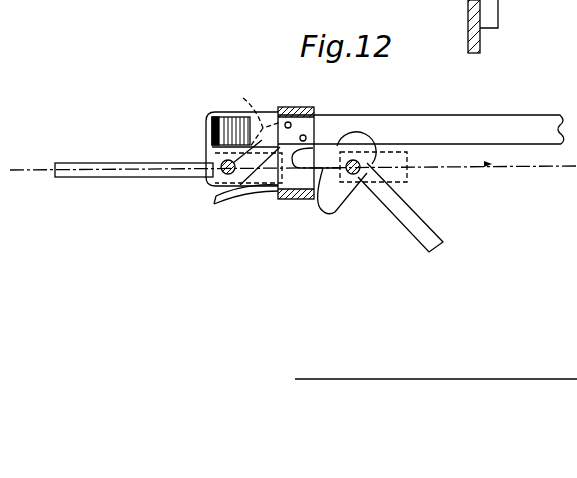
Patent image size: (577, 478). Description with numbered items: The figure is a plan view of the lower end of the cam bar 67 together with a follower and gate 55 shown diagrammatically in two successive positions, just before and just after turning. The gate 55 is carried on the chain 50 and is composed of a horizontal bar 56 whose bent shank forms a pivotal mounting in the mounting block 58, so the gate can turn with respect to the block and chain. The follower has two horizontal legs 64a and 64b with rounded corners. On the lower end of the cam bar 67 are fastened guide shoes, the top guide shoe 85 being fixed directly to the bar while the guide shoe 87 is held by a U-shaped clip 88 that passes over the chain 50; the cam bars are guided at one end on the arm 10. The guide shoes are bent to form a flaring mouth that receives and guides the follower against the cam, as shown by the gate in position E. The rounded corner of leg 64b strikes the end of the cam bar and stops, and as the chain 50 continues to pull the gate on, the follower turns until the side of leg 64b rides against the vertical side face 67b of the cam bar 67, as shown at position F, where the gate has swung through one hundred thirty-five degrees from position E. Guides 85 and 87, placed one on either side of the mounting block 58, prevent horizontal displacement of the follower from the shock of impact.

The arm 10 is at (481, 44).
The chain 50 is at (33, 173).
The gate 55 is at (176, 181).
The horizontal bar 56 is at (103, 163).
The mounting block 58 is at (410, 178).
The follower leg 64a is at (205, 121).
The follower leg 64b is at (248, 92).
The cam bar 67 is at (421, 129).
The vertical side face 67b is at (505, 145).
The guide shoe 85 is at (230, 112).
The guide shoe 87 is at (237, 196).
The U-shaped clip 88 is at (296, 107).
The gate position E is at (157, 160).
The gate position F is at (411, 201).